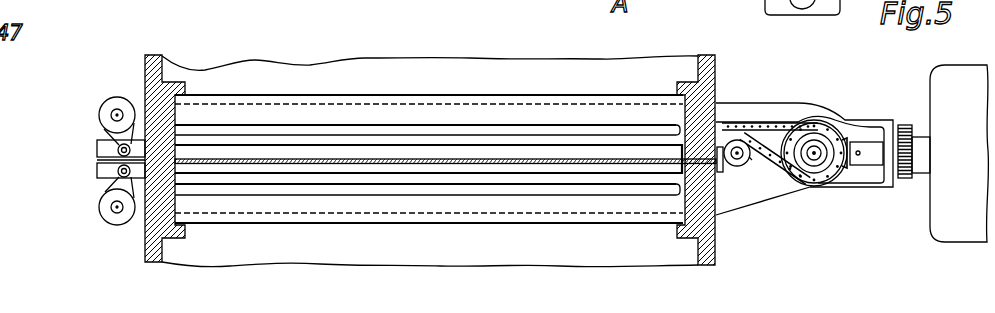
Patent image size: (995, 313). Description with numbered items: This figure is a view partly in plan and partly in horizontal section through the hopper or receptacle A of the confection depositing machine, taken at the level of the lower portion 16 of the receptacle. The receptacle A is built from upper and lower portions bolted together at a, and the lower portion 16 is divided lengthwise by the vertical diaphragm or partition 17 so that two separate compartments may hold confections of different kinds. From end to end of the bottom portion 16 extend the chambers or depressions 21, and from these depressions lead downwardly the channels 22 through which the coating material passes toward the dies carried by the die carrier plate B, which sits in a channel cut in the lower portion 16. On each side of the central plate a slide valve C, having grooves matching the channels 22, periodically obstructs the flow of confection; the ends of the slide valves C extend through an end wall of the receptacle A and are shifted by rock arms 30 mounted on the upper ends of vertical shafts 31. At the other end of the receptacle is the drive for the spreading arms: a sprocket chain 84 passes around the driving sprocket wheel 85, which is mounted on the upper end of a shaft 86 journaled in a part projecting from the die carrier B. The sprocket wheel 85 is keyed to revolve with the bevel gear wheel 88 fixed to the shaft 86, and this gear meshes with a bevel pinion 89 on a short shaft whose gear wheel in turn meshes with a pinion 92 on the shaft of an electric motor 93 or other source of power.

The lower portion of the receptacle 16 is at (716, 238).
The vertical diaphragm or partition 17 is at (527, 158).
The chambers or depressions 21 is at (355, 101).
The channels 22 is at (433, 130).
The rock arms 30 is at (131, 146).
The vertical shafts 31 is at (112, 112).
The sprocket chain 84 is at (778, 125).
The driving sprocket wheel 85 is at (741, 160).
The bolts a is at (755, 162).
The shaft 86 is at (815, 155).
The bevel gear wheel 88 is at (825, 123).
The bevel pinion 89 is at (863, 117).
The pinion 92 is at (908, 127).
The electric motor 93 is at (940, 85).
The hopper or receptacle A is at (716, 77).
The die carrier plate B is at (762, 201).
The slide valve C is at (97, 151).